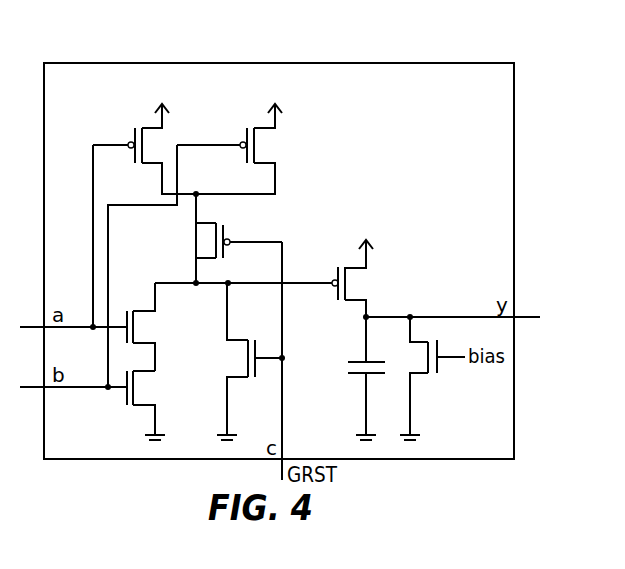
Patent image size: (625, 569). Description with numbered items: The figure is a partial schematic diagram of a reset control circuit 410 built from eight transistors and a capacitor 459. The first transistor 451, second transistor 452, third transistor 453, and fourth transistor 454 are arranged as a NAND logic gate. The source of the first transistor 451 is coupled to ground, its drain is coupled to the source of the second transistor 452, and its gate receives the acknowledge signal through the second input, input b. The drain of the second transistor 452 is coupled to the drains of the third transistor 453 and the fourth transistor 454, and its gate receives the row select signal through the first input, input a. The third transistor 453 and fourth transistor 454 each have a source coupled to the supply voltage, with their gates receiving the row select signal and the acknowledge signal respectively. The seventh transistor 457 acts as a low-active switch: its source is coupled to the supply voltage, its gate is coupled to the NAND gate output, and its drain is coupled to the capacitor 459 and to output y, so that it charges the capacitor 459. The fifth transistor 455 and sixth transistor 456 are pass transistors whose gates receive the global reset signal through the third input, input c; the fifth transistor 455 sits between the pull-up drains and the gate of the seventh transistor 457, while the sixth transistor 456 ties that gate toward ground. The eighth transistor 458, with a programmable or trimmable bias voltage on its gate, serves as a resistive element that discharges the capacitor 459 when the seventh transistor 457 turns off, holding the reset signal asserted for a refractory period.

The reset control circuit 410 is at (470, 63).
The first transistor 451 is at (134, 415).
The second transistor 452 is at (134, 298).
The third transistor 453 is at (140, 116).
The fourth transistor 454 is at (253, 116).
The fifth transistor 455 is at (220, 212).
The sixth transistor 456 is at (243, 331).
The seventh transistor 457 is at (349, 251).
The eighth transistor 458 is at (430, 389).
The capacitor 459 is at (351, 351).